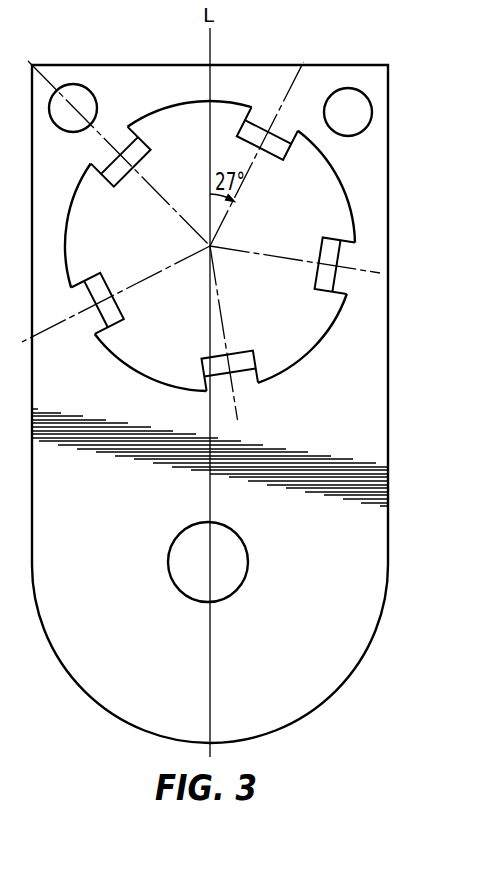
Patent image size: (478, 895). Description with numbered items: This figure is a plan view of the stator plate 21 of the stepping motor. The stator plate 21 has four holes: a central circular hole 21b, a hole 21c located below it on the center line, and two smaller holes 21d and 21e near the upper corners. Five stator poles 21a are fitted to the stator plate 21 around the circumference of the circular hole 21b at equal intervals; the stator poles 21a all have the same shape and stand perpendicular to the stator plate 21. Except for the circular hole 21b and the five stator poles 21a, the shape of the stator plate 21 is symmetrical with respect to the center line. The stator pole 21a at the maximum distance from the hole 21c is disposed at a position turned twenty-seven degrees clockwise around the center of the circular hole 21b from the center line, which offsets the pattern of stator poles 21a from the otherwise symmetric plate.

The stator plate 21 is at (303, 718).
The stator poles 21a is at (146, 145).
The circular hole 21b is at (295, 338).
The hole 21c is at (218, 600).
The hole 21d is at (70, 84).
The hole 21e is at (349, 88).